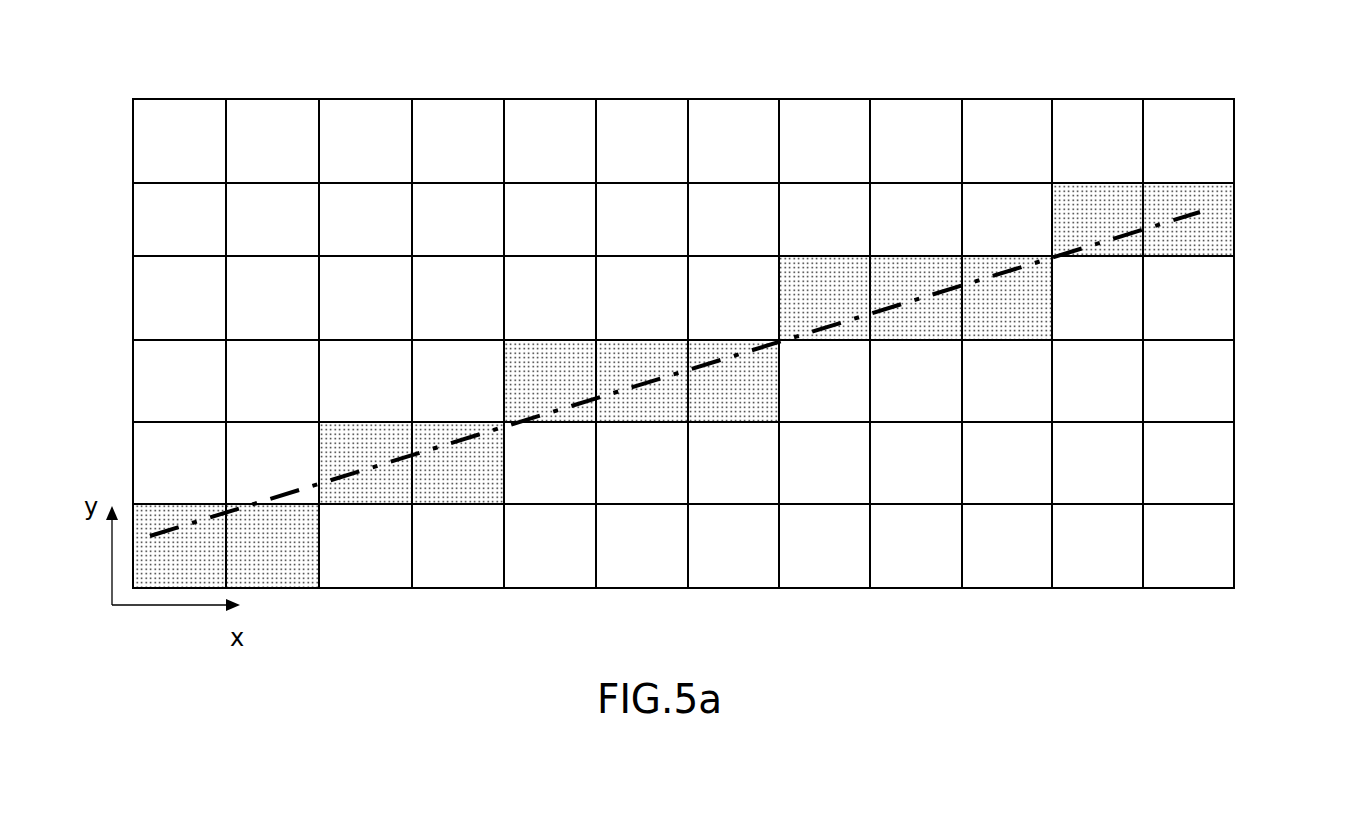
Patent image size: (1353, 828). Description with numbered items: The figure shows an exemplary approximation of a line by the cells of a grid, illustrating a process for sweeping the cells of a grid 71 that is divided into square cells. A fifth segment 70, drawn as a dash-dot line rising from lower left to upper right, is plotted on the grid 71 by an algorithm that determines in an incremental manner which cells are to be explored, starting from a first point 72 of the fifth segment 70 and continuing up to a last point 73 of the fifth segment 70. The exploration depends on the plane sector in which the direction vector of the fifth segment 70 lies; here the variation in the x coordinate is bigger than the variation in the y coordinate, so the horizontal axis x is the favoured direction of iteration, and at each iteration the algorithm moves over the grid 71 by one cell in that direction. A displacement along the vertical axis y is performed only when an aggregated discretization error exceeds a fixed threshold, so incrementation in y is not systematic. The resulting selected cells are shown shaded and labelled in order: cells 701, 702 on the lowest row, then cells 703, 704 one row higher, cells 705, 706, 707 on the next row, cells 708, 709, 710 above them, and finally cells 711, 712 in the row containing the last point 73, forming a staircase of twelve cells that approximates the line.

The fifth segment 70 is at (489, 428).
The grid 71 is at (1271, 76).
The first point 72 is at (166, 524).
The last point 73 is at (1203, 214).
The pixel 701 is at (180, 546).
The pixel 702 is at (273, 546).
The pixel 703 is at (366, 463).
The pixel 704 is at (458, 463).
The pixel 705 is at (550, 381).
The pixel 706 is at (642, 381).
The pixel 707 is at (734, 381).
The pixel 708 is at (825, 298).
The pixel 709 is at (916, 298).
The pixel 710 is at (1007, 298).
The pixel 711 is at (1098, 220).
The pixel 712 is at (1189, 220).